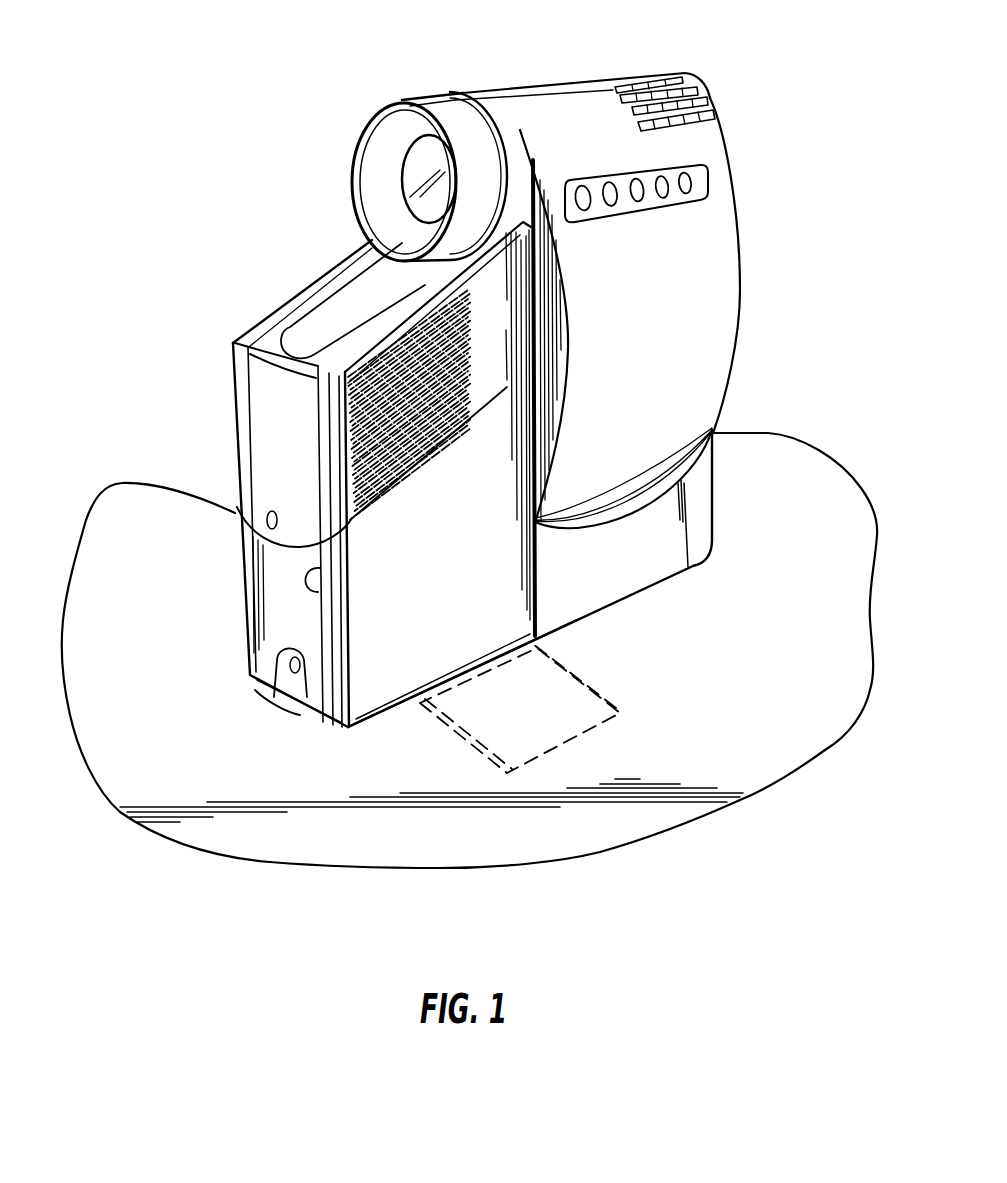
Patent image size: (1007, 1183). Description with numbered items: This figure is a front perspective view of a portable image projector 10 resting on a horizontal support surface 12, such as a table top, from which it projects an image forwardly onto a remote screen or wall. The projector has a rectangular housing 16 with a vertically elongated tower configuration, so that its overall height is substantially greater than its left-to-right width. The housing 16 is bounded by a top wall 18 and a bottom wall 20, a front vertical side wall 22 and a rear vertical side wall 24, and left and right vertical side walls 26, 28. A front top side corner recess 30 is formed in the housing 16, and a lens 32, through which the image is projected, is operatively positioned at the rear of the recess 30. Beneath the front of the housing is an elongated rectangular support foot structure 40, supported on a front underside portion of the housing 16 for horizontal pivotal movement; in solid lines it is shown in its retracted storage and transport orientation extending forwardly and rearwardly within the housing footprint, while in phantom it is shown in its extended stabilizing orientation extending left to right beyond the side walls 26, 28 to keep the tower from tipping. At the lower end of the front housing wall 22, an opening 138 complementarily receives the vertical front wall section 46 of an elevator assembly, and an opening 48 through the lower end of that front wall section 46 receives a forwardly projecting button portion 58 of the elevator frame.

The portable image projector 10 is at (797, 109).
The horizontal support surface 12 is at (827, 656).
The housing 16 is at (740, 285).
The top wall 18 is at (548, 85).
The bottom wall 20 is at (640, 593).
The front vertical side wall 22 is at (266, 415).
The rear vertical side wall 24 is at (713, 480).
The left vertical side wall 26 is at (237, 544).
The right vertical side wall 28 is at (484, 628).
The front top side corner recess 30 is at (325, 253).
The lens 32 is at (423, 95).
The support foot structure 40 is at (589, 679).
The front wall section 46 is at (277, 610).
The opening 48 is at (300, 655).
The button portion 58 is at (287, 678).
The opening 138 is at (322, 590).